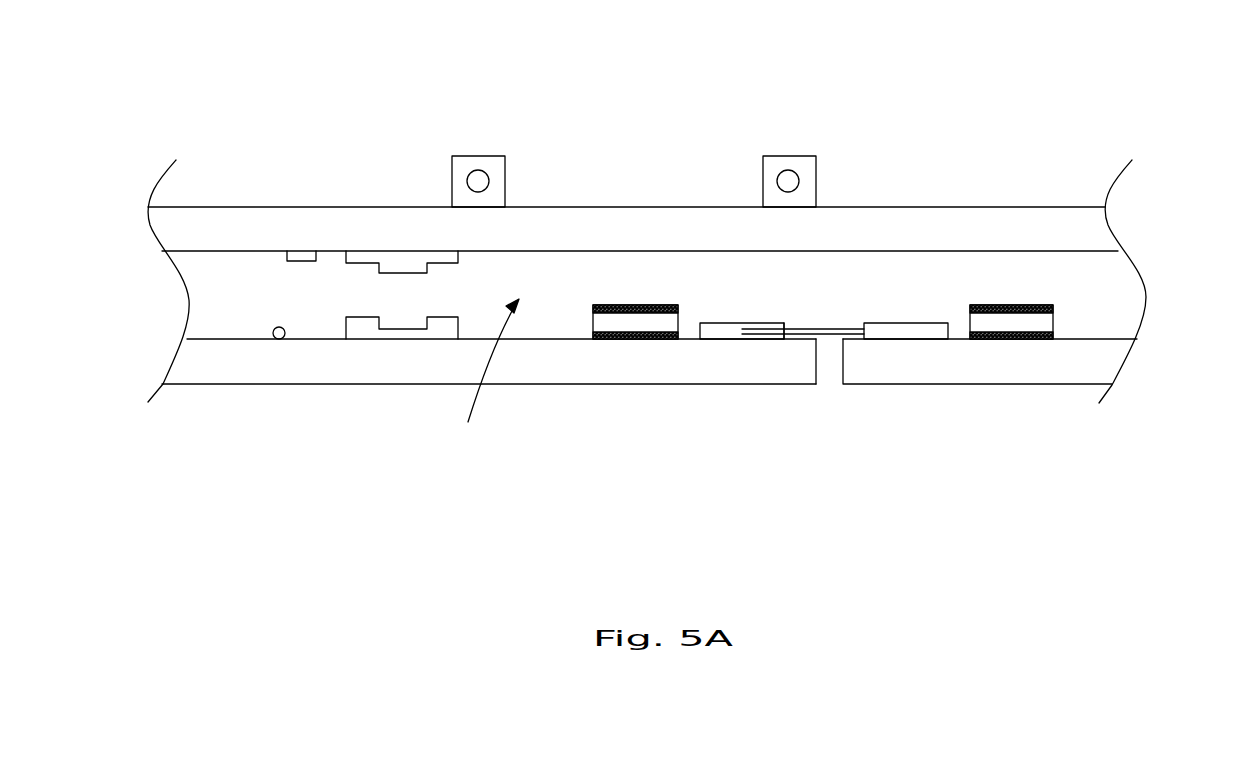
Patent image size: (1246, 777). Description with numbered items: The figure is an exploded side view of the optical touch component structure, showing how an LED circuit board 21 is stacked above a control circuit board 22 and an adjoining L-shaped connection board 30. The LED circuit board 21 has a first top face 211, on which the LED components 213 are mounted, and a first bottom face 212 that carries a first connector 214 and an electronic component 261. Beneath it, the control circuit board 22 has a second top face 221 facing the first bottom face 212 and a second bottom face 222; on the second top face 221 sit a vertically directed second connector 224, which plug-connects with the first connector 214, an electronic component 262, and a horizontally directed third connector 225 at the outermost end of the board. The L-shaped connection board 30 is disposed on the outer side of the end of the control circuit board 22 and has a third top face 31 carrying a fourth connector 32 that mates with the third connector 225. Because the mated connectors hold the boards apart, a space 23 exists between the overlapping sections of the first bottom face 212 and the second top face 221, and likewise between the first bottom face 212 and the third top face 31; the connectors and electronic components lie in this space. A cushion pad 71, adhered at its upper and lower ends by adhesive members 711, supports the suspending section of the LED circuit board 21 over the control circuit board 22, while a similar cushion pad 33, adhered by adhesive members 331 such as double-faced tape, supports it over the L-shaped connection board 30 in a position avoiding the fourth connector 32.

The LED circuit board 21 is at (633, 156).
The first top face 211 is at (627, 207).
The first bottom face 212 is at (237, 252).
The LED component 213 is at (489, 165).
The first connector 214 is at (395, 262).
The electronic component 261 is at (297, 260).
The electronic component 262 is at (279, 339).
The control circuit board 22 is at (472, 406).
The second top face 221 is at (237, 339).
The second bottom face 222 is at (632, 385).
The second connector 224 is at (362, 327).
The third connector 225 is at (719, 331).
The space 23 is at (485, 374).
The cushion pad 71 is at (635, 303).
The adhesive member 711 is at (658, 306).
The L-shaped connection board 30 is at (1026, 368).
The third top face 31 is at (1077, 338).
The fourth connector 32 is at (902, 330).
The cushion pad 33 is at (1036, 300).
The adhesive member 331 is at (1007, 307).